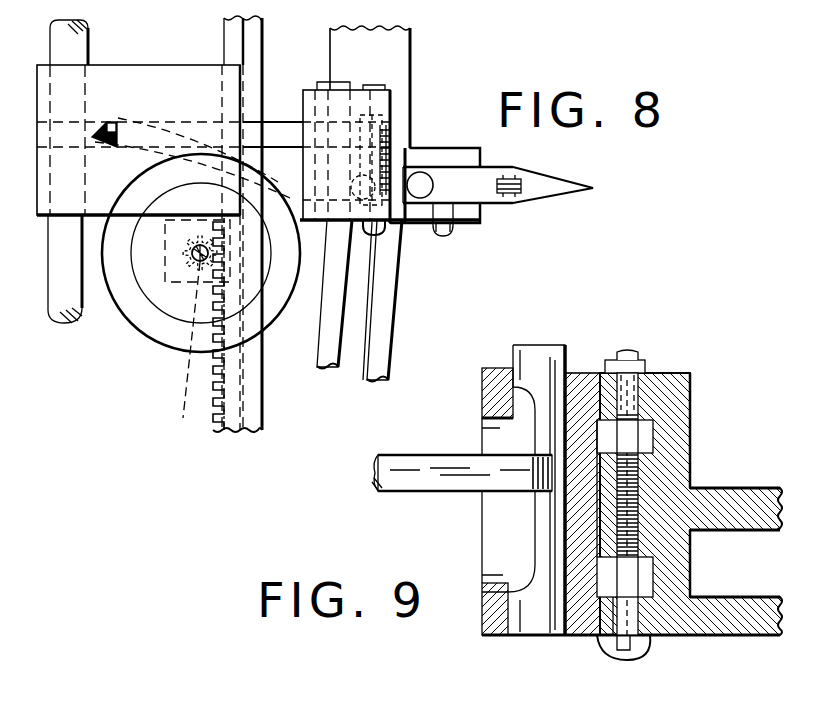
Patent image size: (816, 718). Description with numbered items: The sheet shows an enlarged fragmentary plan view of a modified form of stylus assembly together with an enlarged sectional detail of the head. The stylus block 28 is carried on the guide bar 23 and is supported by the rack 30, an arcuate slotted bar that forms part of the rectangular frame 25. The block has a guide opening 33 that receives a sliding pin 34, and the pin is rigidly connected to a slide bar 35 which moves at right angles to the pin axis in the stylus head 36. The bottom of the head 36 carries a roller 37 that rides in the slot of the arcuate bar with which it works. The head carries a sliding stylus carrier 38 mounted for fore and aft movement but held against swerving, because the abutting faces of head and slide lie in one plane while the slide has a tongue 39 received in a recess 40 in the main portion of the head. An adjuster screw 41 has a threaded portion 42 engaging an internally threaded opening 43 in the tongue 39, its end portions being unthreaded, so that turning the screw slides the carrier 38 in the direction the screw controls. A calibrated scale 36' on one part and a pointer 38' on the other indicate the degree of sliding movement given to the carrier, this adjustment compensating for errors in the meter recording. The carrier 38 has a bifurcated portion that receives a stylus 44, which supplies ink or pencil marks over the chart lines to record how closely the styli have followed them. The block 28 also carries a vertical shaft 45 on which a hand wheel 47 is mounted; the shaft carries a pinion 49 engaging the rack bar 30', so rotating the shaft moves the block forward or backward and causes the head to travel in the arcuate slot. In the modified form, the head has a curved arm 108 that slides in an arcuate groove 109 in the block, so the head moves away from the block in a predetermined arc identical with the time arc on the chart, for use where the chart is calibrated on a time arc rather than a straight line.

In FIG. 8, the guide bar 23 is at (72, 296).
In FIG. 8, the rectangular frame 25 is at (253, 422).
In FIG. 8, the stylus block 28 is at (63, 207).
In FIG. 8, the rack 30 is at (400, 301).
In FIG. 8, the rack bar 30' is at (191, 358).
In FIG. 9, the guide opening 33 is at (493, 523).
In FIG. 8, the sliding pin 34 is at (276, 128).
In FIG. 9, the sliding pin 34 is at (437, 467).
In FIG. 8, the slide bar 35 is at (325, 85).
In FIG. 9, the slide bar 35 is at (563, 347).
In FIG. 8, the stylus head 36 is at (406, 116).
In FIG. 9, the stylus head 36 is at (618, 466).
In FIG. 8, the calibrated scale 36' is at (423, 154).
In FIG. 8, the roller 37 is at (415, 232).
In FIG. 8, the stylus carrier 38 is at (405, 124).
In FIG. 9, the stylus carrier 38 is at (632, 494).
In FIG. 8, the pointer 38' is at (492, 164).
In FIG. 9, the tongue 39 is at (640, 470).
In FIG. 9, the recess 40 is at (600, 585).
In FIG. 9, the adjuster screw 41 is at (637, 657).
In FIG. 9, the threaded portion 42 is at (630, 580).
In FIG. 9, the internally threaded opening 43 is at (633, 500).
In FIG. 8, the stylus 44 is at (487, 193).
In FIG. 8, the vertical shaft 45 is at (187, 268).
In FIG. 8, the hand wheel 47 is at (160, 333).
In FIG. 8, the pinion 49 is at (176, 352).
In FIG. 8, the curved arm 108 is at (100, 133).
In FIG. 8, the arcuate groove 109 is at (145, 152).